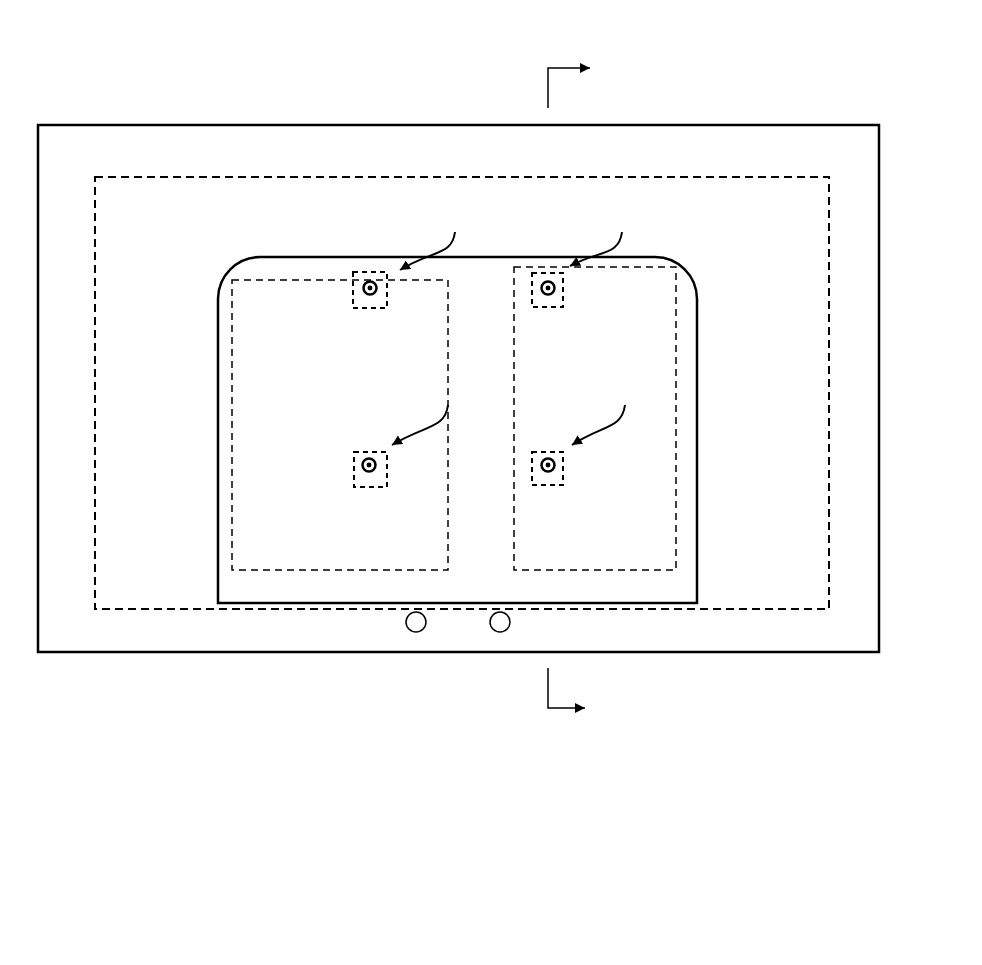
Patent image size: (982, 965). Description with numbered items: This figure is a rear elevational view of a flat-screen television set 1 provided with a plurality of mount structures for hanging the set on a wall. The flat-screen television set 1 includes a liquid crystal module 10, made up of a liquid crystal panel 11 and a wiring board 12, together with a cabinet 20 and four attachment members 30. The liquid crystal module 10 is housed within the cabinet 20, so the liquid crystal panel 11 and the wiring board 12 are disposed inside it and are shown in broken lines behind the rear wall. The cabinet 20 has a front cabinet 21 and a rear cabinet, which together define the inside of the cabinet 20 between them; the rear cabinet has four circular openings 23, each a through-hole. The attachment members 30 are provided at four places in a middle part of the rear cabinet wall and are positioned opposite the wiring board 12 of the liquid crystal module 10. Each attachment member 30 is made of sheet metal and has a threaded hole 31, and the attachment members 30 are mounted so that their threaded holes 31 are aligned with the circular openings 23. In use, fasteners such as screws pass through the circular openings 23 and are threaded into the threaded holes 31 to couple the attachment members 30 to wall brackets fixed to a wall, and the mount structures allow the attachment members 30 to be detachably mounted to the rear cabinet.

The flat-screen television set 1 is at (208, 85).
The liquid crystal module 10 is at (758, 612).
The liquid crystal panel 11 is at (749, 176).
The wiring board 12 is at (232, 381).
The cabinet 20 is at (315, 124).
The front cabinet 21 is at (388, 150).
The circular opening 23 is at (375, 292).
The attachment member 30 is at (370, 272).
The threaded hole 31 is at (363, 290).